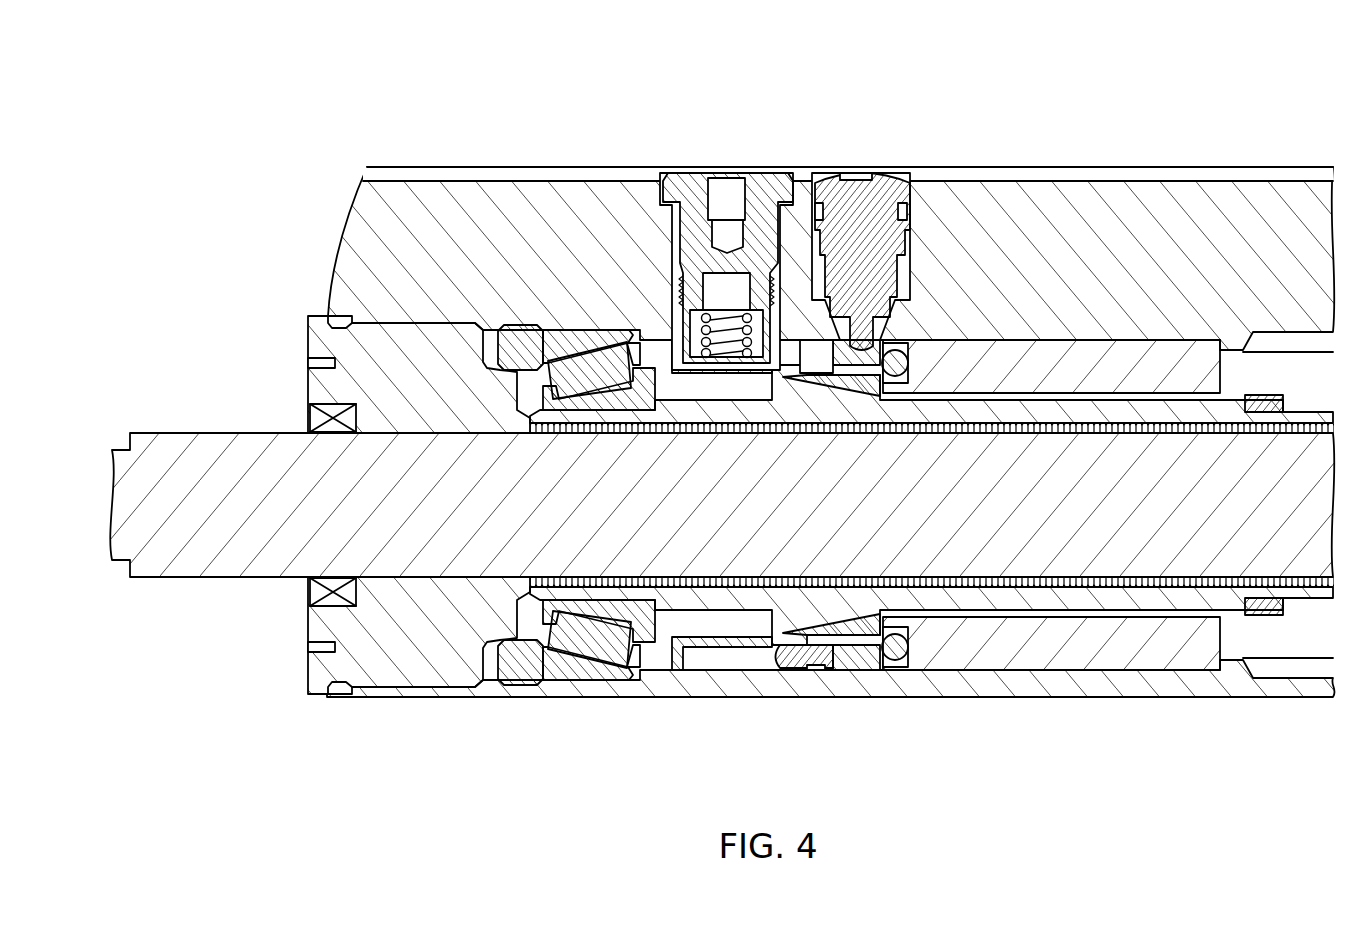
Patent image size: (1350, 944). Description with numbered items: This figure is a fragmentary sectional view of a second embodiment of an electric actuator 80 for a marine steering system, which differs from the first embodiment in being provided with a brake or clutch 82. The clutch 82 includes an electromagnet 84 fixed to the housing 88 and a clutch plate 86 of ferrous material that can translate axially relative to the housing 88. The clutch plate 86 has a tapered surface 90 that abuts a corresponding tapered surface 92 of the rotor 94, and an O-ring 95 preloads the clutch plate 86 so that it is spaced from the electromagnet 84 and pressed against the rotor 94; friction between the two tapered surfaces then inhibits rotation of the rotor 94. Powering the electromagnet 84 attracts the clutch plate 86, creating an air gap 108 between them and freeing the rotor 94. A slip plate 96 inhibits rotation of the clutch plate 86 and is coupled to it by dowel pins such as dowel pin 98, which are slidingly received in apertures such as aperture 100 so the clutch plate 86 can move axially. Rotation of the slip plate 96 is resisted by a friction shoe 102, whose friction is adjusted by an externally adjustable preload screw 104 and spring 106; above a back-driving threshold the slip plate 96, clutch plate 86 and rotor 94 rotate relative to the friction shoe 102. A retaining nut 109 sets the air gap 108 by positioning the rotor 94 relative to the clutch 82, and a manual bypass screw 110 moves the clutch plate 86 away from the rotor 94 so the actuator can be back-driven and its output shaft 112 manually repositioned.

The electric actuator 80 is at (309, 116).
The clutch 82 is at (912, 366).
The electromagnet 84 is at (1167, 353).
The clutch plate 86 is at (815, 350).
The housing 88 is at (1173, 200).
The tapered surface 90 is at (855, 397).
The tapered surface 92 is at (813, 373).
The rotor 94 is at (820, 413).
The O-ring 95 is at (905, 371).
The slip plate 96 is at (677, 385).
The dowel pin 98 is at (788, 655).
The aperture 100 is at (823, 670).
The friction shoe 102 is at (740, 376).
The preload screw 104 is at (768, 192).
The spring 106 is at (723, 322).
The air gap 108 is at (931, 320).
The retaining nut 109 is at (524, 668).
The manual bypass screw 110 is at (858, 202).
The output shaft 112 is at (412, 547).